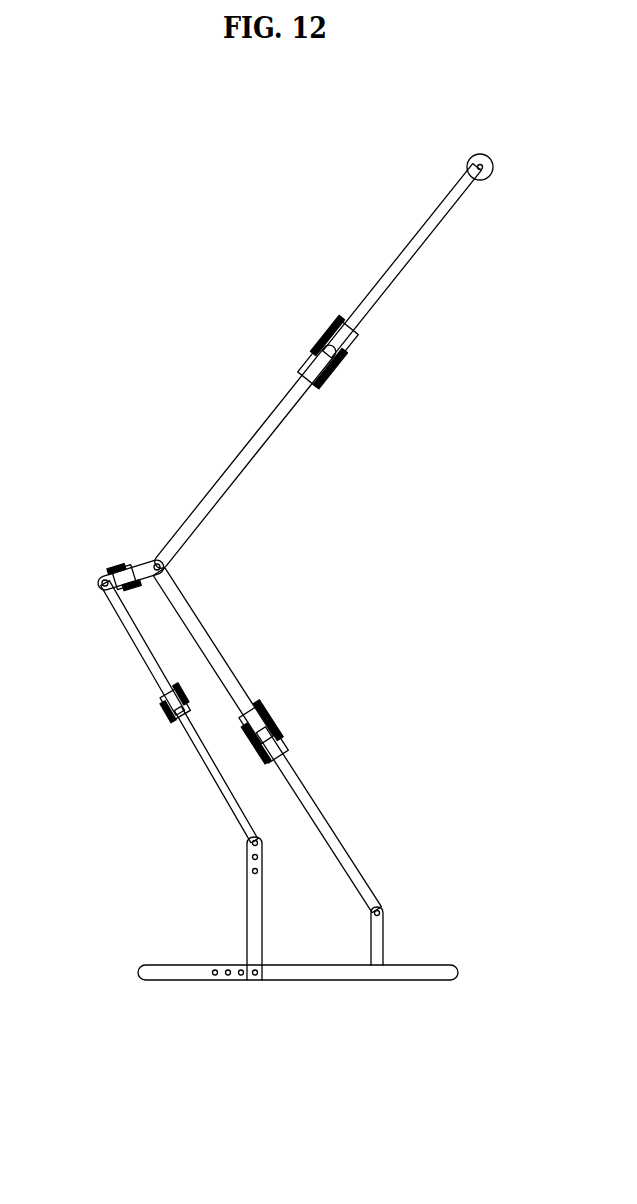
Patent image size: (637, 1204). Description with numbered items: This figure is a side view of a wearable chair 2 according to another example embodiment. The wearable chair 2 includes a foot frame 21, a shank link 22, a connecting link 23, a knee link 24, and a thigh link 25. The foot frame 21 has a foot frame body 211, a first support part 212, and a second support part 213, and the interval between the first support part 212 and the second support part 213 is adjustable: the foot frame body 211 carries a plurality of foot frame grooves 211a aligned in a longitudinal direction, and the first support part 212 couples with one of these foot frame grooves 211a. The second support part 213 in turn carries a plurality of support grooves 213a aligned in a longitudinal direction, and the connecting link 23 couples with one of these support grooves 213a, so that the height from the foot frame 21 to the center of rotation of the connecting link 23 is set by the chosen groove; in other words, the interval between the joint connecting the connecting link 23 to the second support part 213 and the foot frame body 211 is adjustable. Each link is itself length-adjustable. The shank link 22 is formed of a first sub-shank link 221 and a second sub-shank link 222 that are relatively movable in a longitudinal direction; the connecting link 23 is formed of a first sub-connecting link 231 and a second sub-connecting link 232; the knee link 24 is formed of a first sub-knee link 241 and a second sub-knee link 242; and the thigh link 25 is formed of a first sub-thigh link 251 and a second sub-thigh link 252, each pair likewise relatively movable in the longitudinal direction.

The wearable chair 2 is at (281, 117).
The foot frame 21 is at (318, 948).
The foot frame body 211 is at (298, 1012).
The foot frame grooves 211a is at (253, 976).
The first support part 212 is at (372, 937).
The second support part 213 is at (201, 908).
The support grooves 213a is at (252, 844).
The shank link 22 is at (278, 743).
The first sub-shank link 221 is at (311, 809).
The second sub-shank link 222 is at (236, 681).
The connecting link 23 is at (158, 713).
The first sub-connecting link 231 is at (190, 765).
The second sub-connecting link 232 is at (150, 672).
The knee link 24 is at (104, 521).
The first sub-knee link 241 is at (137, 565).
The second sub-knee link 242 is at (95, 544).
The thigh link 25 is at (322, 362).
The first sub-thigh link 251 is at (288, 413).
The second sub-thigh link 252 is at (384, 290).